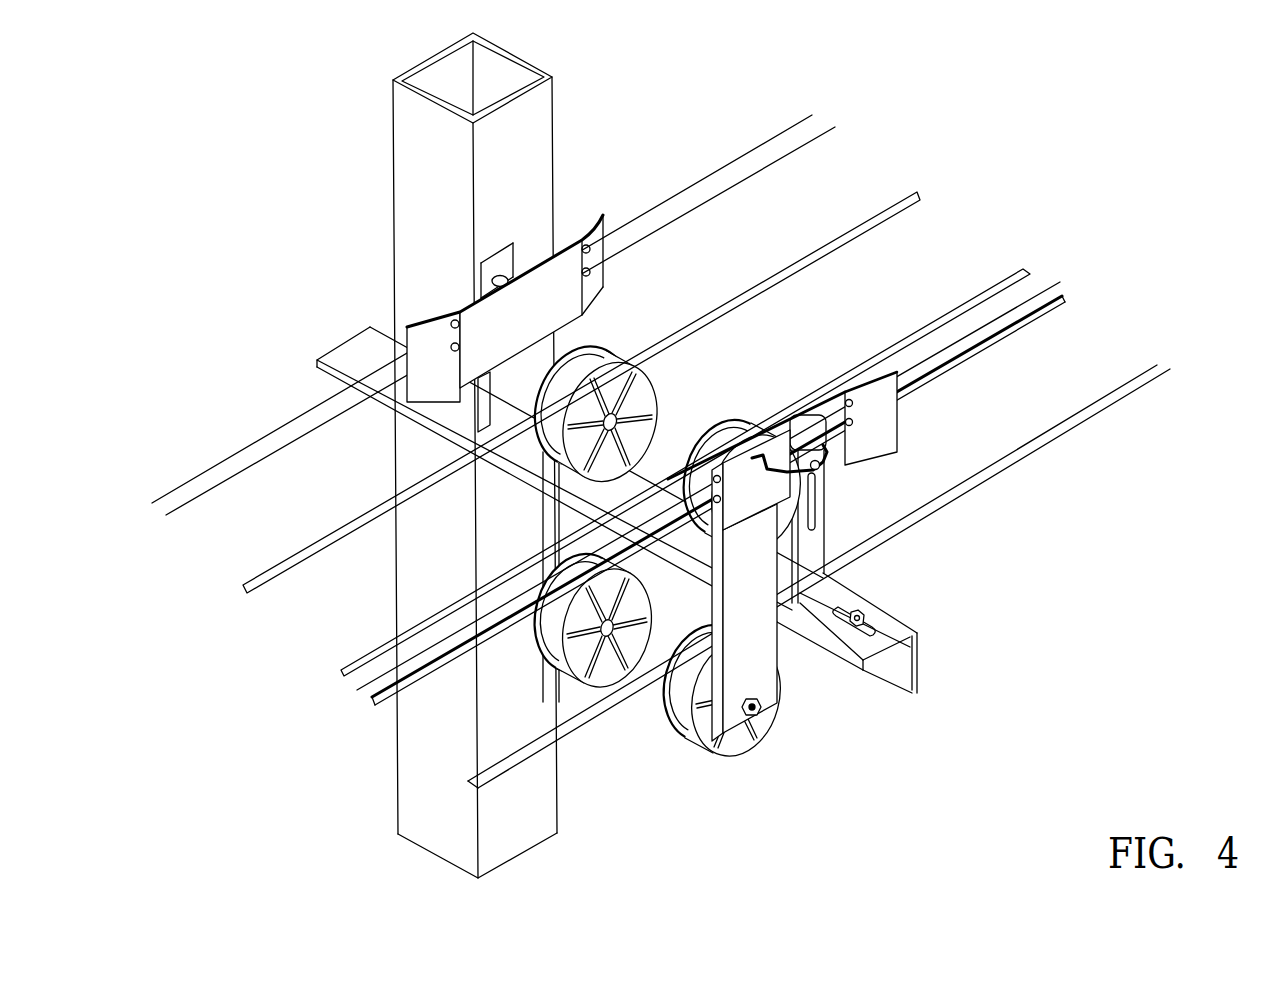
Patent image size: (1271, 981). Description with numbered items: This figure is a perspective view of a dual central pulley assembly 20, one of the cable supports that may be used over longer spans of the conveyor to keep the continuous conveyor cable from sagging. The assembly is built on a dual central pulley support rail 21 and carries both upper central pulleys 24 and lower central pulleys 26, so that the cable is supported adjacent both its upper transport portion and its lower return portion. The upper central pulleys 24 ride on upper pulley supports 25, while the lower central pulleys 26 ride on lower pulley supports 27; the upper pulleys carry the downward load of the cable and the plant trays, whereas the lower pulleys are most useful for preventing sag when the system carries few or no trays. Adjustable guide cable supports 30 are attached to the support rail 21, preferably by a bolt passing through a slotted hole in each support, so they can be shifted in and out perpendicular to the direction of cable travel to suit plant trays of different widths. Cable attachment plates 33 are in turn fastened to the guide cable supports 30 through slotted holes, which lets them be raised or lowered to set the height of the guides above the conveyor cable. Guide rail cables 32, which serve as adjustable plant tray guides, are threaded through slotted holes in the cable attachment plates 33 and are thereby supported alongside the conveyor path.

The dual central pulley assembly 20 is at (952, 604).
The dual central pulley support rail 21 is at (903, 673).
The upper central pulley 24 is at (642, 346).
The upper pulley support 25 is at (563, 475).
The lower central pulley 26 is at (555, 652).
The lower pulley support 27 is at (567, 517).
The adjustable guide cable support 30 is at (505, 400).
The guide rail cable 32 is at (655, 205).
The cable attachment plate 33 is at (580, 297).